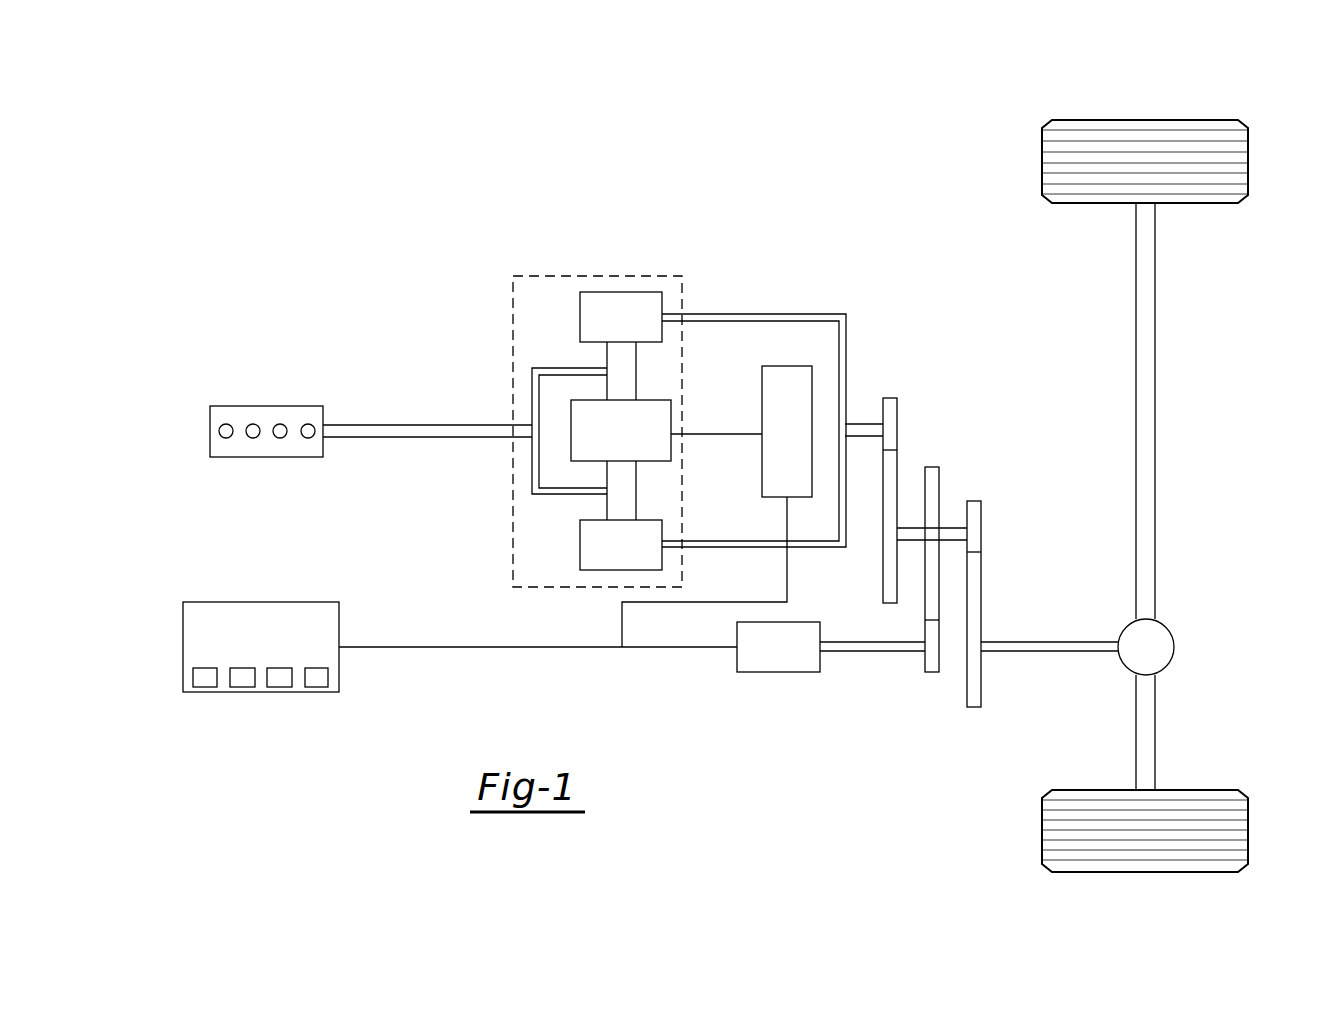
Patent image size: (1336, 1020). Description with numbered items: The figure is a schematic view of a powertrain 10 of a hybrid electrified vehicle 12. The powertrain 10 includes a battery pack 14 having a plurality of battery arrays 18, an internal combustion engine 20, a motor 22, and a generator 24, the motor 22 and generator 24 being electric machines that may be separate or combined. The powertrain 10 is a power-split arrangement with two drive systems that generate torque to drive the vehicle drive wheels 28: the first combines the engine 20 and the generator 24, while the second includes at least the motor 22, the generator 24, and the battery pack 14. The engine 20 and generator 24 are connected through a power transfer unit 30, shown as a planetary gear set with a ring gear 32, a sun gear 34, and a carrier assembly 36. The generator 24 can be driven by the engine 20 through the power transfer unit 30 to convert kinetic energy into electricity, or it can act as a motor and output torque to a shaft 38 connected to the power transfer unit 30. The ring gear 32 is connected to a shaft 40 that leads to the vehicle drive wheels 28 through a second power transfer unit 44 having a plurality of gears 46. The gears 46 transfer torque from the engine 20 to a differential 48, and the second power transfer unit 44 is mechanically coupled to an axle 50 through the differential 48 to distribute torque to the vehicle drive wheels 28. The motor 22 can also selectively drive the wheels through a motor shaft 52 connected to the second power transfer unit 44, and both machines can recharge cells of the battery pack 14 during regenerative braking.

The powertrain 10 is at (326, 179).
The electrified vehicle 12 is at (845, 226).
The battery pack 14 is at (460, 641).
The battery arrays 18 is at (205, 687).
The internal combustion engine 20 is at (210, 406).
The motor 22 is at (780, 672).
The generator 24 is at (812, 381).
The vehicle drive wheels 28 is at (1145, 120).
The power transfer unit 30 is at (648, 412).
The ring gear 32 is at (580, 318).
The sun gear 34 is at (655, 461).
The carrier assembly 36 is at (532, 400).
The shaft 38 is at (721, 427).
The shaft 40 is at (866, 437).
The second power transfer unit 44 is at (993, 547).
The gears 46 is at (897, 413).
The differential 48 is at (1174, 647).
The axle 50 is at (1155, 410).
The motor shaft 52 is at (875, 652).